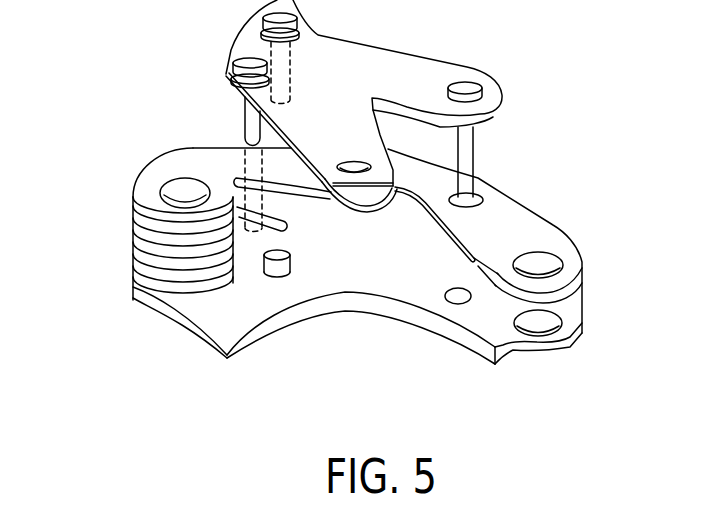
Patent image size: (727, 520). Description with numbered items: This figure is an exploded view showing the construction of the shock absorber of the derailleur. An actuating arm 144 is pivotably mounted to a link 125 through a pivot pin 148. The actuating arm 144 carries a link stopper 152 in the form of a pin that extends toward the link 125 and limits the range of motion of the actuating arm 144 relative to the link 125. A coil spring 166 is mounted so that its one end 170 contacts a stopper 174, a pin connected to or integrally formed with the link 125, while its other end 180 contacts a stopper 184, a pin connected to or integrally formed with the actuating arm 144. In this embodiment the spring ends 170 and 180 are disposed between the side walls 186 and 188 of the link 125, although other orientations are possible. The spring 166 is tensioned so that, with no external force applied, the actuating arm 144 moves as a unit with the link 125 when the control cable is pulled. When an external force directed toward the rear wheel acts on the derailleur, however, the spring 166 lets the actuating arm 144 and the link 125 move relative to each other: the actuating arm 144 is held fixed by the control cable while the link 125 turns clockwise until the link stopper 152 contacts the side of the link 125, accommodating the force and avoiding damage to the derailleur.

The link 125 is at (514, 215).
The actuating arm 144 is at (363, 62).
The pivot pin 148 is at (477, 158).
The link stopper 152 is at (250, 46).
The coil spring 166 is at (133, 248).
The spring end 170 is at (292, 268).
The stopper 174 is at (276, 274).
The spring end 180 is at (287, 219).
The stopper 184 is at (243, 128).
The side wall 186 is at (450, 336).
The side wall 188 is at (474, 262).